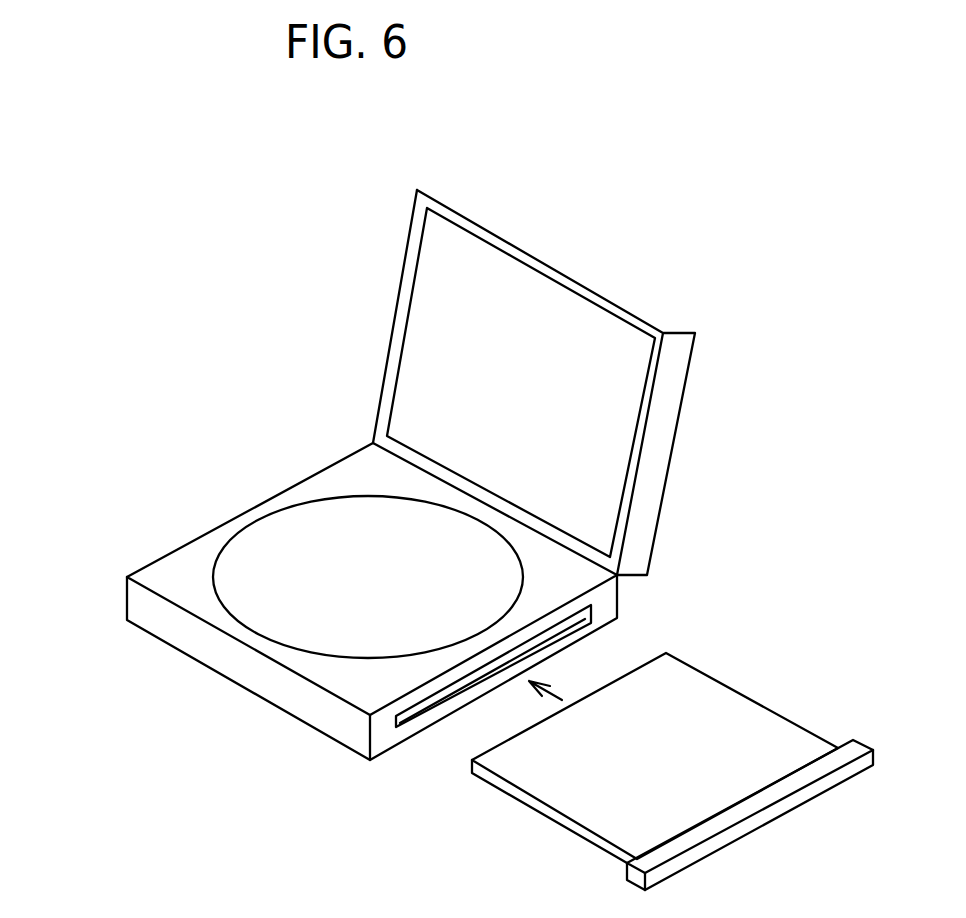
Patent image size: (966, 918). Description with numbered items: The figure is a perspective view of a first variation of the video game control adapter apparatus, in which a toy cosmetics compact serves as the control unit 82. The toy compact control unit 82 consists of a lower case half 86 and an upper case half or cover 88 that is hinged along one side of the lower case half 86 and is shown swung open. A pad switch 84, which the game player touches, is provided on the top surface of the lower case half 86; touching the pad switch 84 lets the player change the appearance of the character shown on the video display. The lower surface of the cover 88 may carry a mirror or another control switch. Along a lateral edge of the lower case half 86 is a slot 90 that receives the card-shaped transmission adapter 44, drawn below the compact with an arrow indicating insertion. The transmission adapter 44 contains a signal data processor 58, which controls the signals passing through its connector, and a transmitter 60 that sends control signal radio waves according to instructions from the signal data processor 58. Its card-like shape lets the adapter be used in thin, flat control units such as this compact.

The toy compact control unit 82 is at (123, 297).
The pad switch 84 is at (265, 528).
The lower case half 86 is at (243, 667).
The cover 88 is at (658, 455).
The slot 90 is at (591, 607).
The transmission adapter 44 is at (705, 771).
The signal data processor 58 is at (687, 678).
The transmitter 60 is at (870, 758).